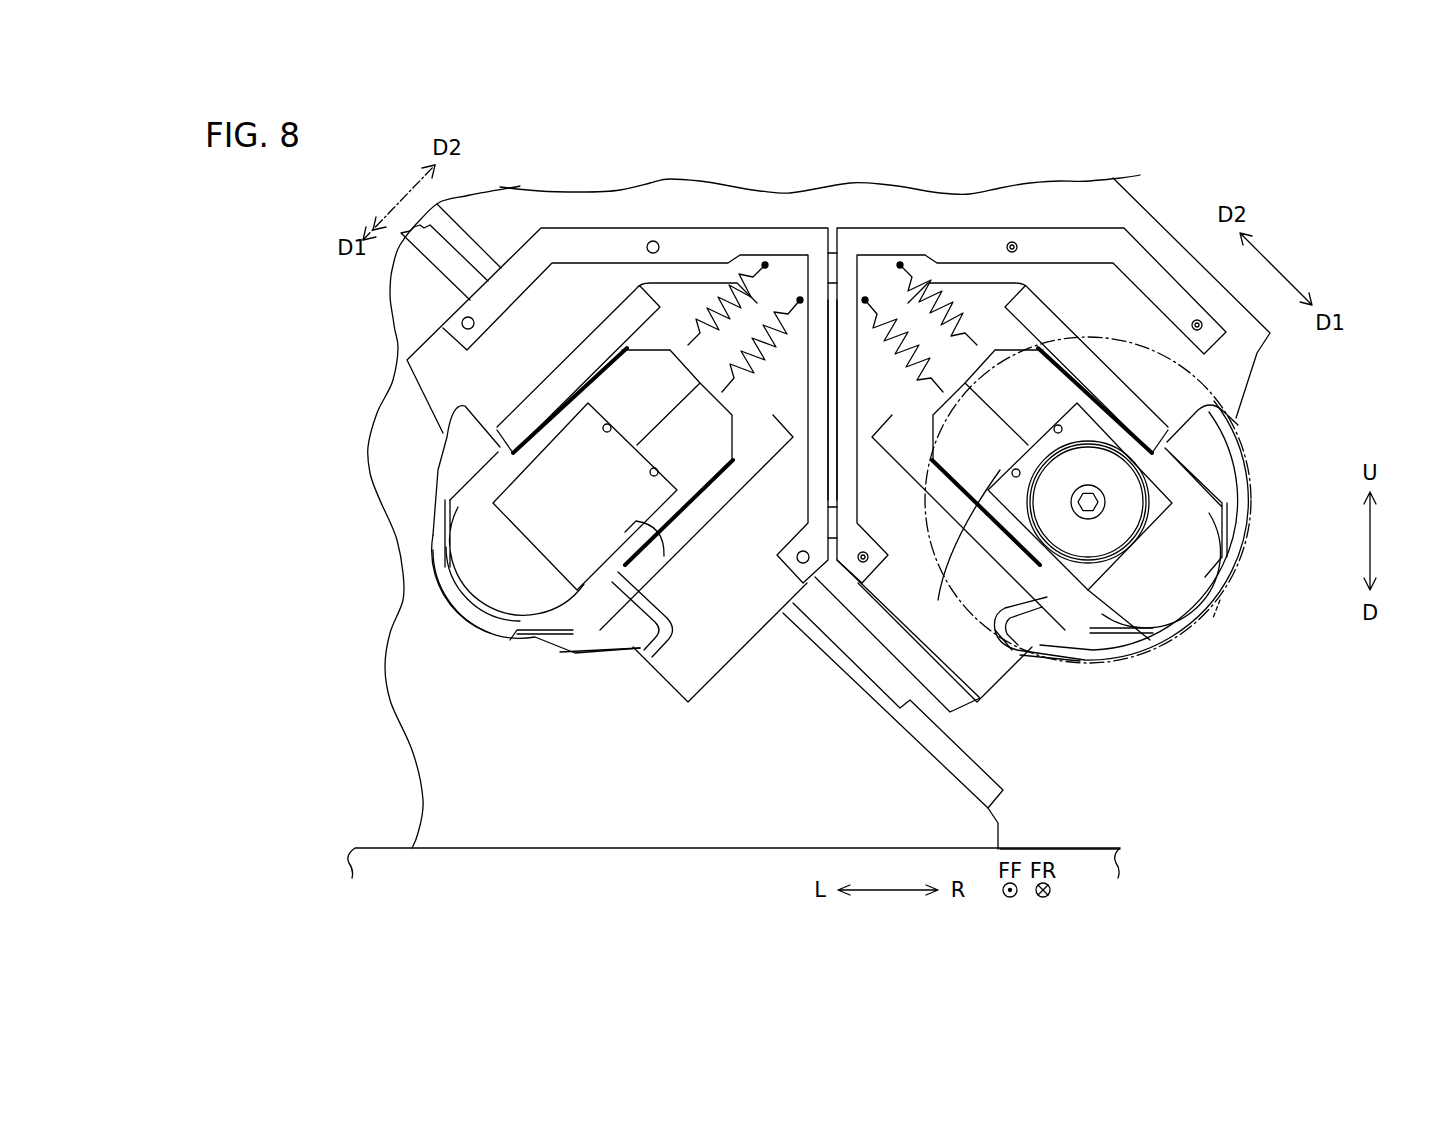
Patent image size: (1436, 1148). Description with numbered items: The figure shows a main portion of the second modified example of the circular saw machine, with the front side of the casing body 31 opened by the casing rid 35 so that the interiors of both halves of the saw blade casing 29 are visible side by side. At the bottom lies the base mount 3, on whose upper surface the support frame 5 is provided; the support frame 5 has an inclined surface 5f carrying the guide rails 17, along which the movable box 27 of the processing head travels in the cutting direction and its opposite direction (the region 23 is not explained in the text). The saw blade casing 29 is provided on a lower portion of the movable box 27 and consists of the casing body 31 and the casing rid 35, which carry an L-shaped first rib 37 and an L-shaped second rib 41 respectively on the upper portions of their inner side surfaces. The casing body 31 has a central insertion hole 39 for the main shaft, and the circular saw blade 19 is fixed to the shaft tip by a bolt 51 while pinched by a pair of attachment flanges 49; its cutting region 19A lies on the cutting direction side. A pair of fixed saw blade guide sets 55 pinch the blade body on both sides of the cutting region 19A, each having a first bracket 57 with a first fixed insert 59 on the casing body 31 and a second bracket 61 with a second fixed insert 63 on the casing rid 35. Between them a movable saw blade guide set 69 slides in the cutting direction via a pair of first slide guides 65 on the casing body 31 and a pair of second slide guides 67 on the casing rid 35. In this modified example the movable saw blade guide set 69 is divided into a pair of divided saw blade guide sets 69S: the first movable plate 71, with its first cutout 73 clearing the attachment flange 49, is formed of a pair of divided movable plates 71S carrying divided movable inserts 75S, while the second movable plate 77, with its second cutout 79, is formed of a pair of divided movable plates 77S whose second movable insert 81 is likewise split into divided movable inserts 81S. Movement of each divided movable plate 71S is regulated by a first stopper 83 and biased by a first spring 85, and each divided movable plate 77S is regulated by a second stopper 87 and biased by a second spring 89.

The base mount 3 is at (1060, 848).
The support frame 5 is at (641, 850).
The inclined surface 5f is at (925, 733).
The guide rail 17 is at (958, 752).
The circular saw blade 19 is at (1265, 456).
The cutting region 19A is at (1213, 618).
The support arm 23 is at (850, 640).
The movable box 27 is at (1133, 205).
The saw blade casing 29 is at (883, 148).
The casing body 31 is at (886, 238).
The casing rid 35 is at (772, 238).
The first rib 37 is at (1058, 237).
The insertion hole 39 is at (1085, 450).
The second rib 41 is at (566, 237).
The attachment flange 49 is at (1060, 527).
The bolt 51 is at (1095, 510).
The fixed saw blade guide set 55 is at (1080, 672).
The first bracket 57 is at (1232, 487).
The first fixed insert 59 is at (1237, 551).
The second bracket 61 is at (438, 460).
The second fixed insert 63 is at (433, 552).
The first slide guide 65 is at (1045, 312).
The second slide guide 67 is at (548, 387).
The movable saw blade guide set 69 is at (1240, 595).
The divided saw blade guide set 69S is at (449, 605).
The first movable plate 71 is at (940, 403).
The divided movable plate 71S is at (1068, 353).
The first cutout 73 is at (960, 547).
The divided movable insert 75S is at (1227, 597).
The second movable plate 77 is at (723, 412).
The divided movable plate 77S is at (670, 433).
The second cutout 79 is at (655, 535).
The second movable insert 81 is at (490, 628).
The divided movable insert 81S is at (470, 590).
The first stopper 83 is at (1054, 425).
The first spring 85 is at (908, 335).
The second stopper 87 is at (607, 433).
The second spring 89 is at (757, 335).